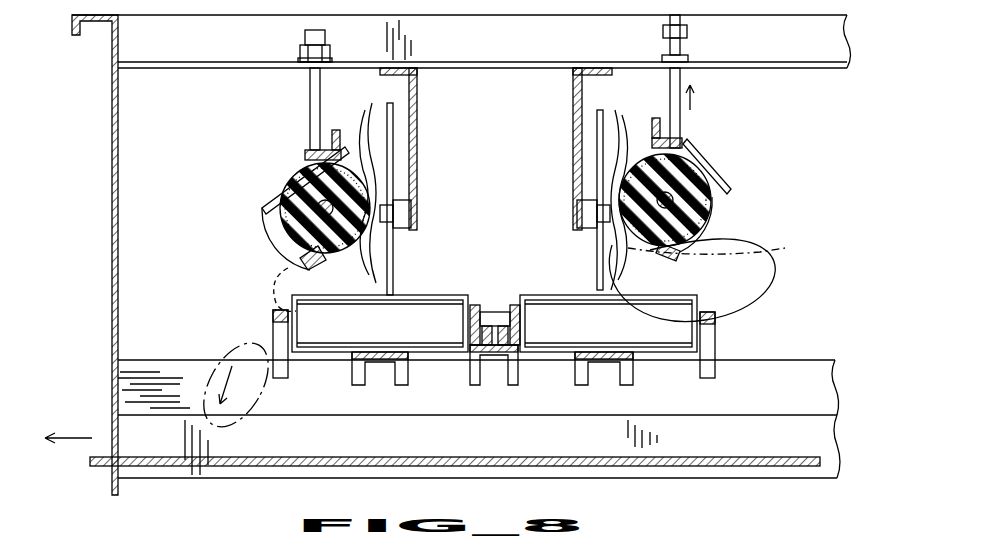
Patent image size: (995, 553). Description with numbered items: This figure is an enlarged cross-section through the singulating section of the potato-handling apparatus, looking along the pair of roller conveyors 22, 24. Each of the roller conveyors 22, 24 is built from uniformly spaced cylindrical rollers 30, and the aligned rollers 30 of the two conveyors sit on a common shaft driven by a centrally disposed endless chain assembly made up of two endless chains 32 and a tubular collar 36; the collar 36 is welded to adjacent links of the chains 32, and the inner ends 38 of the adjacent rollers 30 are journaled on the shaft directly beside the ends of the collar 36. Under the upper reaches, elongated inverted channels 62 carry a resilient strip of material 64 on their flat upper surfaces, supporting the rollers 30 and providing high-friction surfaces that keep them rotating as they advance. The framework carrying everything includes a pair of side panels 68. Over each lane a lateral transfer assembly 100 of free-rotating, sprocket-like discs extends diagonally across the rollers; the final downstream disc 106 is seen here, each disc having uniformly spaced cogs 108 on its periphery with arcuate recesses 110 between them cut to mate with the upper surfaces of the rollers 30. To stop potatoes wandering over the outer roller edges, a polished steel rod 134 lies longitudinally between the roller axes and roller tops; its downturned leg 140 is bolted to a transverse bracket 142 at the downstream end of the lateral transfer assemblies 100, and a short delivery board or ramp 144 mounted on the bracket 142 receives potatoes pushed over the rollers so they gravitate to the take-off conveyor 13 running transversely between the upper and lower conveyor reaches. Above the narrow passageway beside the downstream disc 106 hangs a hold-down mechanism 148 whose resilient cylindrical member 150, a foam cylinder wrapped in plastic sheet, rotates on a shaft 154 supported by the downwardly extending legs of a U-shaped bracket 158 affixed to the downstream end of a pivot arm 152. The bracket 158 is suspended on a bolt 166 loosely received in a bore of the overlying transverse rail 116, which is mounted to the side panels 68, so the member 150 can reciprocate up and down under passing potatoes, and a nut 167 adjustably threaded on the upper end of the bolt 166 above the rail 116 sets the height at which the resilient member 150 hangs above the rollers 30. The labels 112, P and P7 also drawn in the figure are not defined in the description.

The take-off conveyor 13 is at (289, 443).
The roller conveyor 22 is at (286, 289).
The roller conveyor 24 is at (713, 300).
The cylindrical rollers 30 is at (329, 330).
The endless chains 32 is at (502, 322).
The tubular collar 36 is at (515, 320).
The inner ends of the rollers 38 is at (470, 342).
The inverted channels 62 is at (400, 370).
The resilient strip of material 64 is at (355, 357).
The side panels 68 is at (112, 212).
The lateral transfer assembly 100 is at (563, 159).
The downstream disc 106 is at (397, 188).
The cogs 108 is at (370, 105).
The arcuate recesses 110 is at (395, 239).
The hanger post 112 is at (575, 100).
The transverse rail 116 is at (840, 58).
The rod 134 is at (273, 312).
The downturned leg 140 is at (273, 323).
The bracket 142 is at (730, 448).
The delivery board or ramp 144 is at (823, 390).
The hold-down mechanism 148 is at (272, 170).
The resilient cylindrical member 150 is at (270, 197).
The pivot arm 152 is at (321, 148).
The shaft 154 is at (315, 215).
The U-shaped bracket 158 is at (321, 158).
The bolt 166 is at (313, 39).
The nut 167 is at (315, 54).
The product P is at (212, 353).
The product path P7 is at (720, 248).